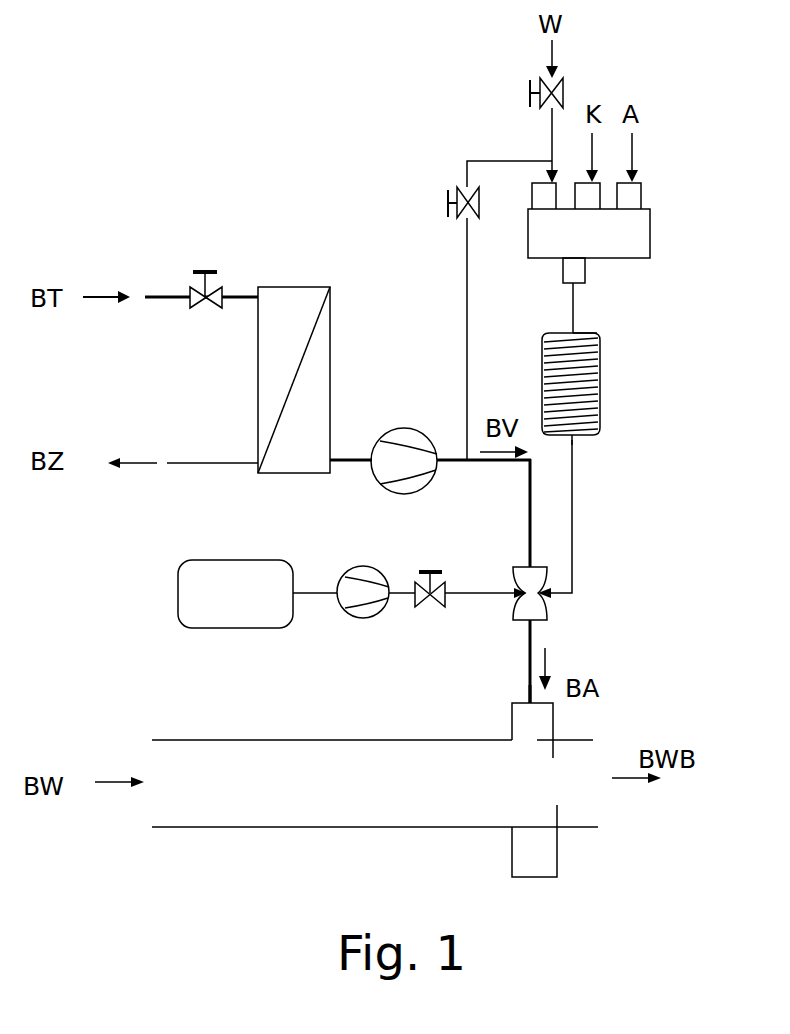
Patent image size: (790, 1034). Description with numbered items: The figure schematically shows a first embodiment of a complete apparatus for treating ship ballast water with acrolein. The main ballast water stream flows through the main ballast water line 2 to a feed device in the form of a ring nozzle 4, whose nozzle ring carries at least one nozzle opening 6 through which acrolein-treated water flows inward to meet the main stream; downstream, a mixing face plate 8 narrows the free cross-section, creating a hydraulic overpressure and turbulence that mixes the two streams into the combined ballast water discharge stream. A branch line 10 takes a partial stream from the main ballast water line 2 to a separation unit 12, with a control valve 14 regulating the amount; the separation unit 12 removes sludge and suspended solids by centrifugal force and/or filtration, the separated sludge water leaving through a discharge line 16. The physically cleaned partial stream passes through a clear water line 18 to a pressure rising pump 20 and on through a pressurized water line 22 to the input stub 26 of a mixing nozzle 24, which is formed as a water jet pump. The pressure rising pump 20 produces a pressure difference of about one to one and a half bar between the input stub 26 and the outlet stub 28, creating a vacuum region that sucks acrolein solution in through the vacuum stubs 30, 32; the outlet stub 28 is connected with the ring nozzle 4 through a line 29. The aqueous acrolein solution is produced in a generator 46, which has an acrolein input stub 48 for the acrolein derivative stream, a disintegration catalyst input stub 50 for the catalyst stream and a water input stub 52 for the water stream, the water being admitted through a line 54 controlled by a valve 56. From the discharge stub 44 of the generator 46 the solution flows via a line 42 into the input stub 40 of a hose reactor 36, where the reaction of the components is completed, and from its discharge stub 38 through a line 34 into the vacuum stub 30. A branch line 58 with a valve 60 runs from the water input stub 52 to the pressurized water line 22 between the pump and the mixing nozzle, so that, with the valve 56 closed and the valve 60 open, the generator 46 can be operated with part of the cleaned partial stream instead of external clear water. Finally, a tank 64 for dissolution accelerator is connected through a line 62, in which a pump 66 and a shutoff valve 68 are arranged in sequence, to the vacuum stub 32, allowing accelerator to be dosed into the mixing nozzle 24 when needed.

The main ballast water line 2 is at (285, 803).
The ring nozzle 4 is at (556, 758).
The nozzle opening 6 is at (530, 737).
The mixing face plate 8 is at (557, 812).
The branch line 10 is at (167, 300).
The separation unit 12 is at (285, 298).
The control valve 14 is at (187, 280).
The discharge line 16 is at (182, 462).
The clear water line 18 is at (347, 457).
The pressure rising pump 20 is at (395, 428).
The pressurized water line 22 is at (493, 463).
The mixing nozzle 24 is at (584, 624).
The input stub 26 is at (532, 557).
The outlet stub 28 is at (527, 633).
The line 29 is at (527, 688).
The vacuum stub 30 is at (552, 597).
The vacuum stub 32 is at (516, 590).
The line 34 is at (573, 553).
The hose reactor 36 is at (563, 397).
The discharge stub 38 is at (573, 443).
The input stub 40 is at (594, 384).
The line 42 is at (573, 298).
The discharge stub 44 is at (585, 265).
The generator 46 is at (633, 230).
The acrolein input stub 48 is at (642, 197).
The disintegration catalyst input stub 50 is at (595, 197).
The water input stub 52 is at (545, 203).
The line 54 is at (532, 110).
The valve 56 is at (522, 93).
The branch line 58 is at (467, 308).
The valve 60 is at (445, 190).
The line 62 is at (320, 597).
The tank 64 is at (195, 588).
The pump 66 is at (380, 608).
The shutoff valve 68 is at (433, 607).